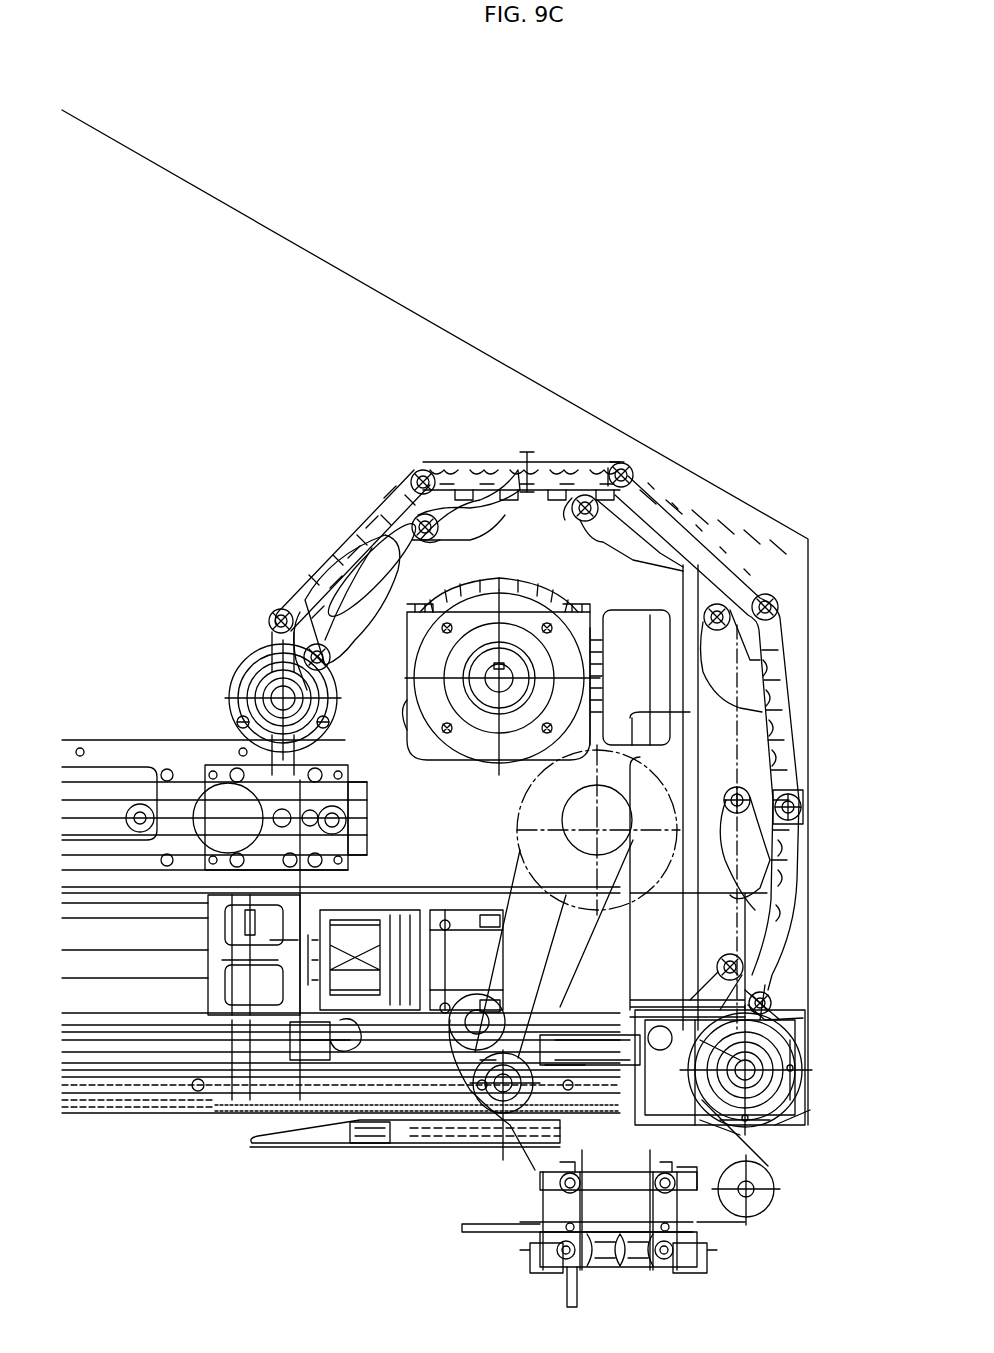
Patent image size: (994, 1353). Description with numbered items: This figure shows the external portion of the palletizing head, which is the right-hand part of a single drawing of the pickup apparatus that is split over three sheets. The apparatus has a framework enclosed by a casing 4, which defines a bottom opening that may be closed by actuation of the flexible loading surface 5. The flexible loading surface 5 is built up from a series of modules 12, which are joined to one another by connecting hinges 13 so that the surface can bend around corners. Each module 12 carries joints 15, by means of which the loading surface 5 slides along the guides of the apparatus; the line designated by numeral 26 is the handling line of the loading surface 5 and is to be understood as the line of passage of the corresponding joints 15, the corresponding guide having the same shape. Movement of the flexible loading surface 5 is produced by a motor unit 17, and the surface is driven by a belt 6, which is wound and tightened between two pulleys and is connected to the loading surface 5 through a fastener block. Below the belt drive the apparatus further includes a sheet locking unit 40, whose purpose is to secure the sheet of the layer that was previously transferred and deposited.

The casing 4 is at (228, 205).
The flexible loading surface 5 is at (693, 511).
The connecting hinges 13 is at (418, 468).
The joints 15 is at (542, 465).
The handling line 26 is at (390, 537).
The module 12 is at (307, 567).
The motor unit 17 is at (478, 757).
The belt 6 is at (538, 913).
The sheet locking unit 40 is at (614, 1276).